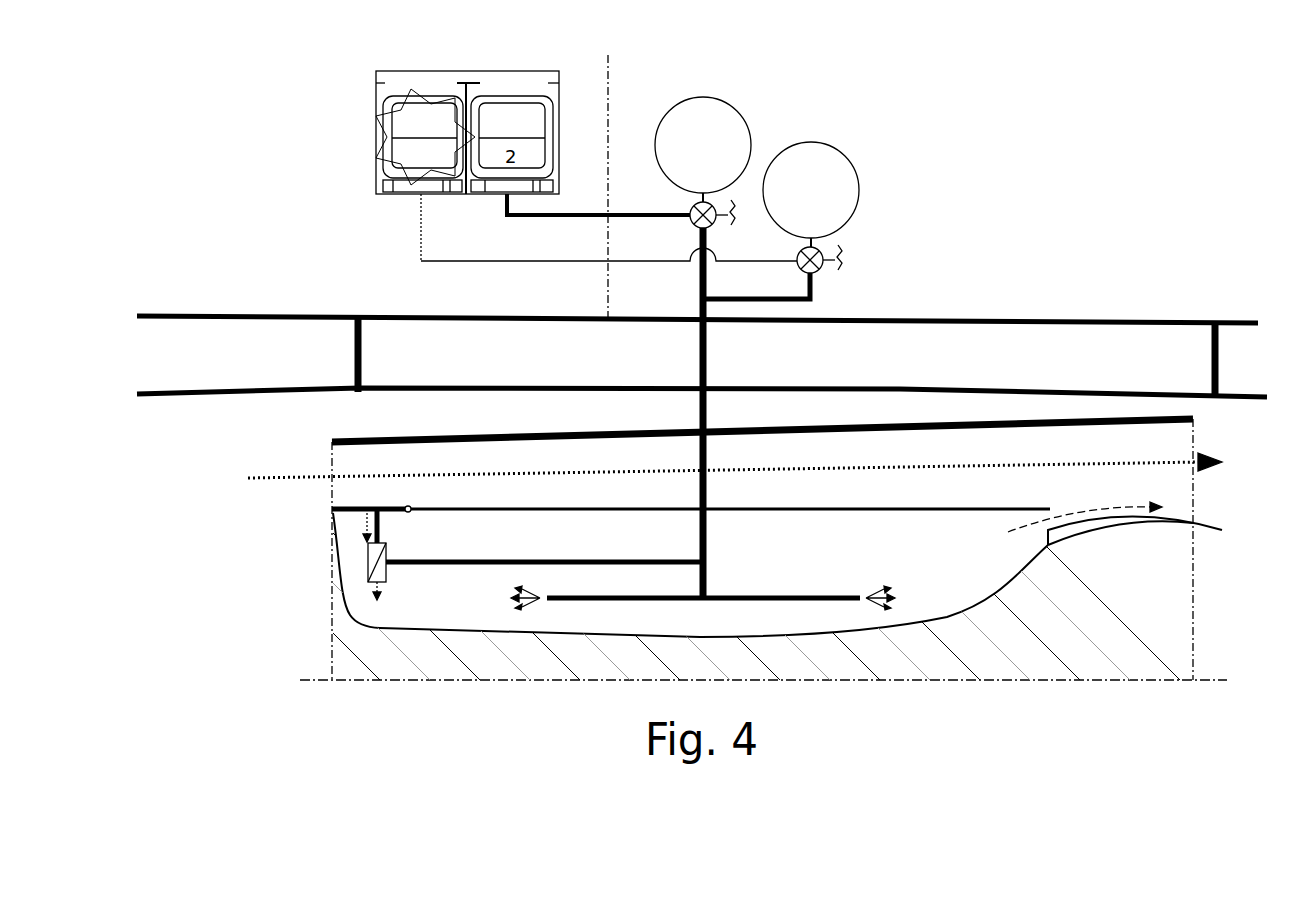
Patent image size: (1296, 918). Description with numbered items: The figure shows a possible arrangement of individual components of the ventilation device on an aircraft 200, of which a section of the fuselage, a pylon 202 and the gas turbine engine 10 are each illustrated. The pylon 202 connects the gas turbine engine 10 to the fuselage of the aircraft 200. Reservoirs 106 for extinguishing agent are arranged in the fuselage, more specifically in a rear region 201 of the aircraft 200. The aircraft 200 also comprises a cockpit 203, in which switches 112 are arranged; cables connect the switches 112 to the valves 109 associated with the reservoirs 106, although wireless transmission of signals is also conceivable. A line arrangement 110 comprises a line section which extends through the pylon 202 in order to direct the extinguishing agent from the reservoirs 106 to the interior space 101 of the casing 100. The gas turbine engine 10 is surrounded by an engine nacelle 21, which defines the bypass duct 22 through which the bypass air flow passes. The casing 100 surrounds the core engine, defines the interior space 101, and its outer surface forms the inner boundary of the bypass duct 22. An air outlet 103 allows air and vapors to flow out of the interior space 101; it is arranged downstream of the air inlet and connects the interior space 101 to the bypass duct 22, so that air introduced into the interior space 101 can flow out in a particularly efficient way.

The aircraft 200 is at (172, 185).
The switches 112 is at (375, 103).
The reservoirs 106 is at (847, 148).
The valves 109 is at (825, 247).
The cockpit 203 is at (390, 267).
The gas turbine engine 10 is at (148, 382).
The engine nacelle 21 is at (295, 385).
The rear region 201 is at (993, 287).
The pylon 202 is at (913, 371).
The line arrangement 110 is at (690, 347).
The bypass duct 22 is at (825, 467).
The casing 100 is at (935, 508).
The interior space 101 is at (852, 569).
The air outlet 103 is at (1050, 510).